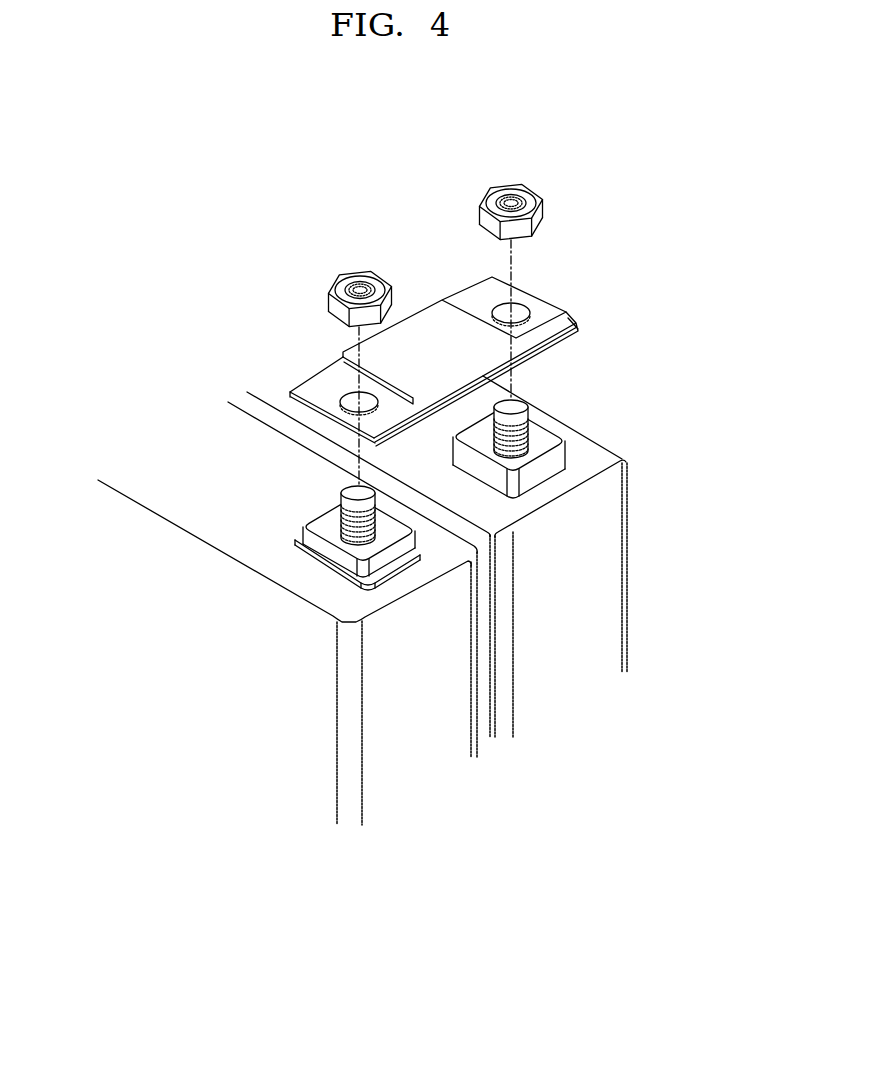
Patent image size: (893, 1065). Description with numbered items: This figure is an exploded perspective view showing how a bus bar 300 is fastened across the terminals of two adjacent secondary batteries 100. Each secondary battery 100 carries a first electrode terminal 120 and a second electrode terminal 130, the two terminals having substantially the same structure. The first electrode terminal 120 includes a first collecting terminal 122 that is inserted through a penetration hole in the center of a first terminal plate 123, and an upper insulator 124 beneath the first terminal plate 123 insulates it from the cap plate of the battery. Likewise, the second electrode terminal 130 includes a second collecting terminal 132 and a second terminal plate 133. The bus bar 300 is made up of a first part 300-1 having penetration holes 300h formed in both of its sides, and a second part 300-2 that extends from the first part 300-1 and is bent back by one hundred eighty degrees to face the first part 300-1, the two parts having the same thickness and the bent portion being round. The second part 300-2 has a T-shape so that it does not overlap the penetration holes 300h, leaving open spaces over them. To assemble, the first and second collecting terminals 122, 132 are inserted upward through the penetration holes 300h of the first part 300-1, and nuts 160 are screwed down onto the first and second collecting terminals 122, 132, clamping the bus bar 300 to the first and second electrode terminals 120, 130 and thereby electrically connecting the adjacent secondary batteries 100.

The secondary battery 100 is at (613, 568).
The first electrode terminal 120 is at (337, 497).
The first collecting terminal 122 is at (338, 510).
The first terminal plate 123 is at (332, 552).
The upper insulator 124 is at (392, 574).
The second electrode terminal 130 is at (532, 402).
The second collecting terminal 132 is at (528, 430).
The second terminal plate 133 is at (568, 462).
The nut 160 is at (340, 277).
The bus bar 300 is at (458, 160).
The first part 300-1 is at (470, 297).
The second part 300-2 is at (420, 330).
The penetration hole 300h is at (523, 312).